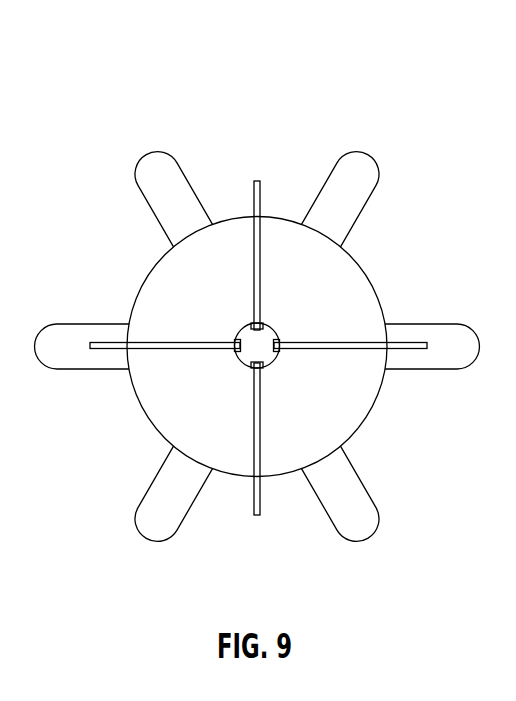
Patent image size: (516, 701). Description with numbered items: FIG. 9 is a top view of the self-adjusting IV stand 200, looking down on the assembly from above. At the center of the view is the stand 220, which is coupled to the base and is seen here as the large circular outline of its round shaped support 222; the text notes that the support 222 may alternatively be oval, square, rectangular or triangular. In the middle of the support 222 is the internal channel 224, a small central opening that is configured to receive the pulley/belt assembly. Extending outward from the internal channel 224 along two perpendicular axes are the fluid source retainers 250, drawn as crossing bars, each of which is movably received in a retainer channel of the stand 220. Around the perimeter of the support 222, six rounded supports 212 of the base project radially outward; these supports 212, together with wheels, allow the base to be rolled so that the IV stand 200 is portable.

The IV stand 200 is at (385, 58).
The stand 220 is at (394, 291).
The support 222 is at (142, 283).
The internal channel 224 is at (265, 356).
The fluid source retainers 250 is at (257, 517).
The supports 212 is at (347, 508).